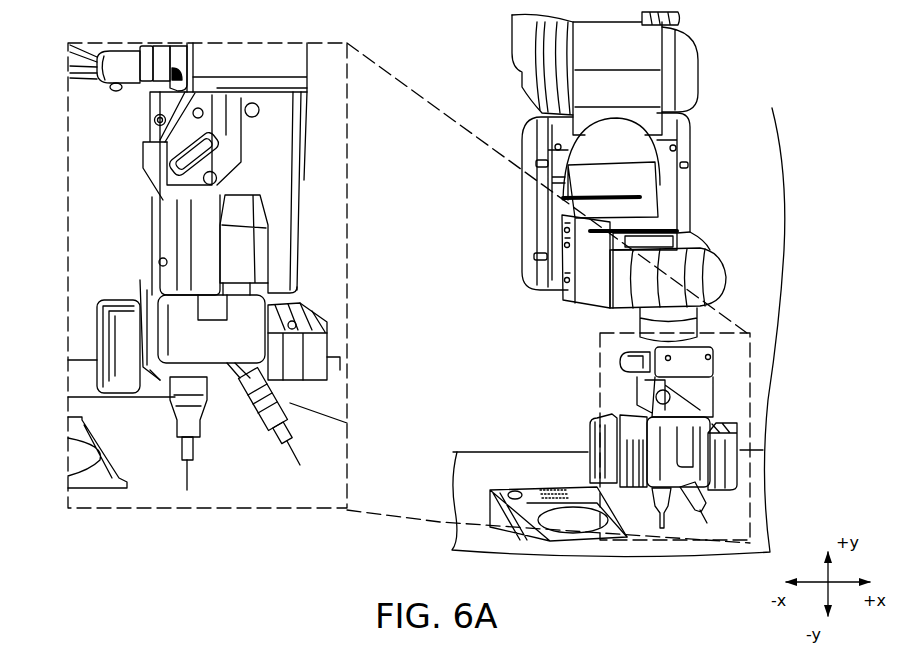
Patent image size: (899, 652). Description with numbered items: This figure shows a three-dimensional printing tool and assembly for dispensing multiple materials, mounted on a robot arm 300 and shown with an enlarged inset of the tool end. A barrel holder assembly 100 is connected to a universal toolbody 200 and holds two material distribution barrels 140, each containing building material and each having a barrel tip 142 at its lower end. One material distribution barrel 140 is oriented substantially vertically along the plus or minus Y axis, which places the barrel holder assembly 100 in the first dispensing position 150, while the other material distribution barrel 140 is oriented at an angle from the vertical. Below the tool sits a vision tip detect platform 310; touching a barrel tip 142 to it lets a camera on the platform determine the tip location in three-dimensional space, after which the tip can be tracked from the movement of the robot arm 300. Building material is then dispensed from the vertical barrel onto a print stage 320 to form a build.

The barrel holder assembly 100 is at (134, 245).
The material distribution barrel 140 is at (172, 402).
The barrel tip 142 is at (188, 466).
The first dispensing position 150 is at (293, 400).
The universal toolbody 200 is at (327, 191).
The robot arm 300 is at (743, 81).
The vision tip detect platform 310 is at (117, 297).
The print stage 320 is at (527, 493).